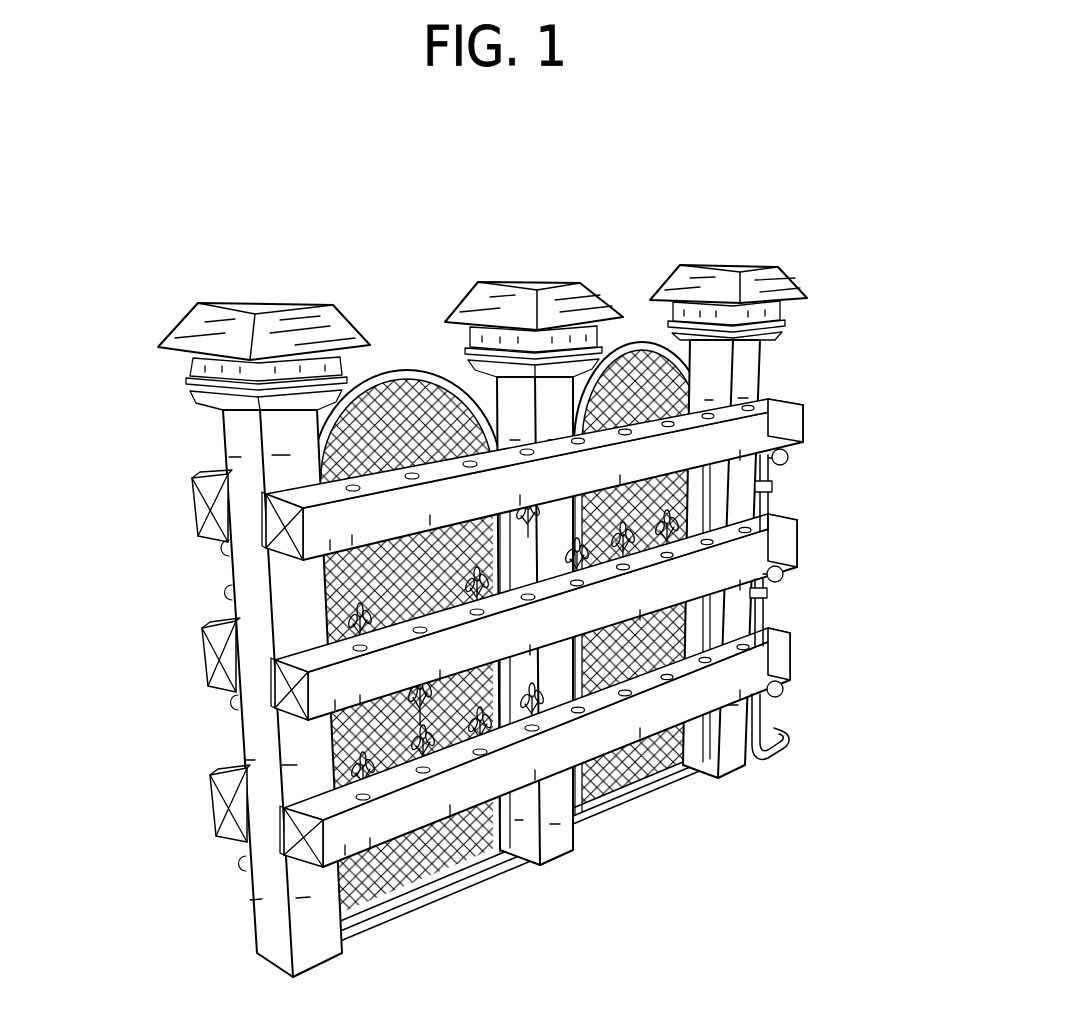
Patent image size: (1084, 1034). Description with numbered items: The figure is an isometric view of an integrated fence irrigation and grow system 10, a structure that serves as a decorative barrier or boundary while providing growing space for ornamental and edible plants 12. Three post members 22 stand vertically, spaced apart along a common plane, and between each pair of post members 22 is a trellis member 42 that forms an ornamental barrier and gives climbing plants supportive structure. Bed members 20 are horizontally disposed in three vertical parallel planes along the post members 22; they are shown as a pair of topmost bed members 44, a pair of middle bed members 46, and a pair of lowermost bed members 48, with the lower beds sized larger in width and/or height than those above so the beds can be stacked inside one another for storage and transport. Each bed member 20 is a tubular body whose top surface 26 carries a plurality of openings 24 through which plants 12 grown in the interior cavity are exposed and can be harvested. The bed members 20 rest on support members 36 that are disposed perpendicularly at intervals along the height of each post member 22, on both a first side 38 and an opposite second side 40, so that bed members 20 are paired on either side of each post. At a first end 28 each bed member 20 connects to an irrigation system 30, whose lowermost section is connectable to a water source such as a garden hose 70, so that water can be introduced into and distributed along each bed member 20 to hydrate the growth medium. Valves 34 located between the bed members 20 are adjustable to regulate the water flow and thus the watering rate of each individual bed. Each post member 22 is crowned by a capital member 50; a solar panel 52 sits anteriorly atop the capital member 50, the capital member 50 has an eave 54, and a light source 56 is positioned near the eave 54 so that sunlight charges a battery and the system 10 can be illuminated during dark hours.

The integrated fence irrigation and grow system 10 is at (915, 206).
The plants 12 is at (552, 725).
The bed members 20 is at (447, 640).
The post members 22 is at (220, 431).
The openings 24 is at (420, 475).
The top surface 26 is at (785, 406).
The first end 28 is at (818, 522).
The irrigation system 30 is at (820, 624).
The valves 34 is at (772, 486).
The support members 36 is at (330, 900).
The first side 38 is at (325, 952).
The second side 40 is at (234, 911).
The trellis member 42 is at (647, 340).
The topmost bed members 44 is at (228, 580).
The middle bed members 46 is at (236, 722).
The lowermost bed members 48 is at (282, 850).
The capital member 50 is at (788, 262).
The solar panel 52 is at (744, 263).
The eave 54 is at (576, 300).
The light source 56 is at (510, 337).
The garden hose 70 is at (775, 746).